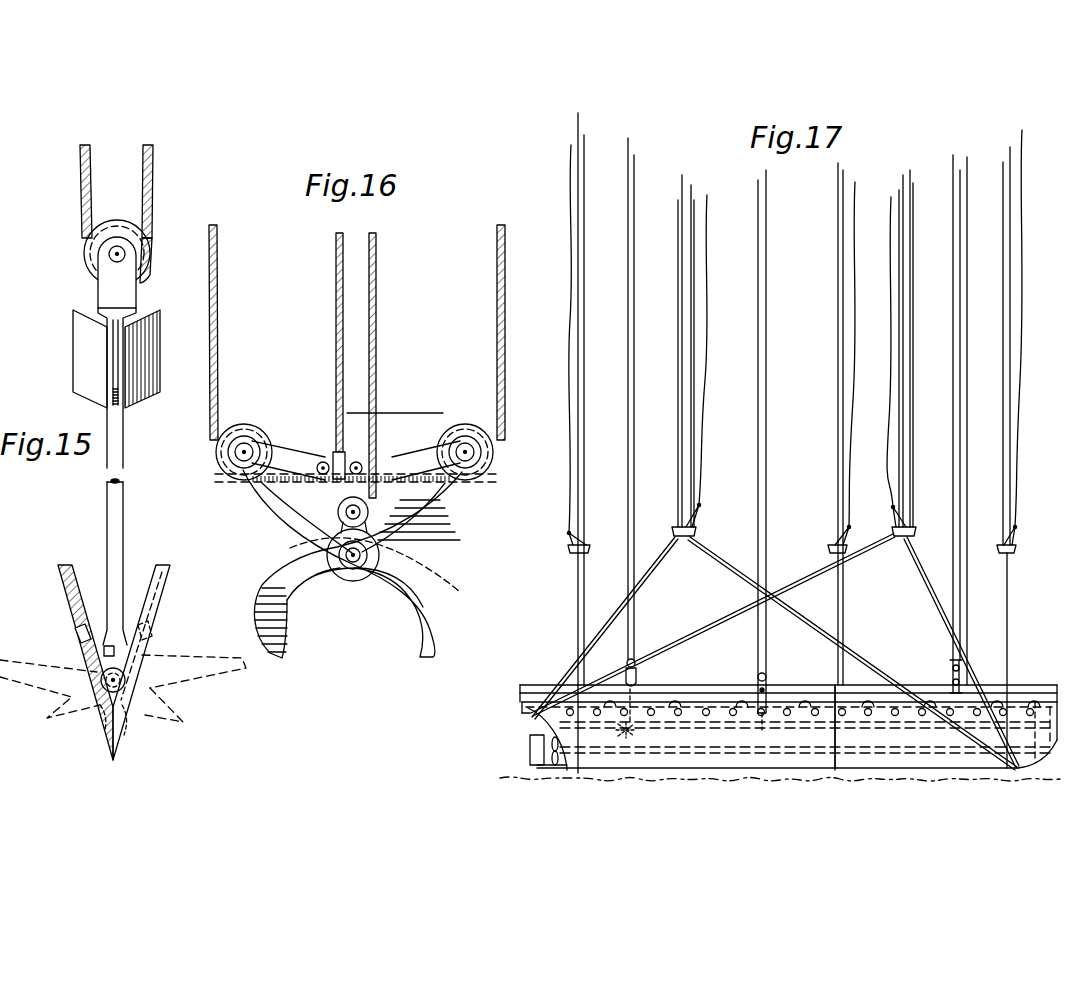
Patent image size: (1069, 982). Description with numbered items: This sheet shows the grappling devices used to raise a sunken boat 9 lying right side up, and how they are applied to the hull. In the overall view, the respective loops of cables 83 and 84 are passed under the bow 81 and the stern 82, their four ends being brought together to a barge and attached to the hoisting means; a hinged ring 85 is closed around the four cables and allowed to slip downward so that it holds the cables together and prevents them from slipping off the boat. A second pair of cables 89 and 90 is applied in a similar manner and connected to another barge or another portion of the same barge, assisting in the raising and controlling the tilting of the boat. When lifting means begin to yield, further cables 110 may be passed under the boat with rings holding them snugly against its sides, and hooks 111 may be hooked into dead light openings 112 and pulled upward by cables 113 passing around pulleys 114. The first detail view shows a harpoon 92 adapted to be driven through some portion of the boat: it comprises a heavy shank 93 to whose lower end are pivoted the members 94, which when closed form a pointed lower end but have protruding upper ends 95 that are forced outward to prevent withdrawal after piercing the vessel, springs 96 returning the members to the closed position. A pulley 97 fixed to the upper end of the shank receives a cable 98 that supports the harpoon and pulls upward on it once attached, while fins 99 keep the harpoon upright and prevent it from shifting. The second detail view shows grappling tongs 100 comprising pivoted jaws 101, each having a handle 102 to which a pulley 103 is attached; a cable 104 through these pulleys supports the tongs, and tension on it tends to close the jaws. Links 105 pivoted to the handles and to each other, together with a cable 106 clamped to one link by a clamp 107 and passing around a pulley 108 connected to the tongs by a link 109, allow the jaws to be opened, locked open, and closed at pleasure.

In FIG. 17, the sunken boat 9 is at (783, 760).
In FIG. 17, the bow 81 is at (1042, 742).
In FIG. 17, the stern 82 is at (537, 737).
In FIG. 17, the cable 83 is at (867, 660).
In FIG. 17, the cable 84 is at (600, 630).
In FIG. 17, the hinged ring 85 is at (686, 537).
In FIG. 17, the cable 89 is at (930, 578).
In FIG. 17, the cable 90 is at (719, 632).
In FIG. 15, the harpoon 92 is at (99, 563).
In FIG. 17, the harpoon 92 is at (636, 731).
In FIG. 15, the shank 93 is at (116, 497).
In FIG. 15, the members 94 is at (86, 665).
In FIG. 15, the protruding upper ends 95 is at (60, 588).
In FIG. 15, the springs 96 is at (103, 705).
In FIG. 15, the pulley 97 is at (86, 256).
In FIG. 15, the cable 98 is at (143, 173).
In FIG. 17, the cable 98 is at (636, 612).
In FIG. 15, the fins 99 is at (80, 333).
In FIG. 16, the grappling tongs 100 is at (353, 568).
In FIG. 17, the grappling tongs 100 is at (950, 668).
In FIG. 16, the pivoted jaws 101 is at (262, 632).
In FIG. 16, the handle 102 is at (438, 515).
In FIG. 16, the pulley 103 is at (224, 472).
In FIG. 16, the cable 104 is at (497, 355).
In FIG. 16, the links 105 is at (291, 452).
In FIG. 16, the cable 106 is at (338, 322).
In FIG. 16, the clamp 107 is at (333, 448).
In FIG. 16, the pulley 108 is at (368, 506).
In FIG. 16, the link 109 is at (330, 518).
In FIG. 17, the cables 110 is at (575, 601).
In FIG. 17, the hooks 111 is at (768, 693).
In FIG. 17, the dead light openings 112 is at (763, 715).
In FIG. 17, the cables 113 is at (760, 633).
In FIG. 17, the pulleys 114 is at (757, 677).